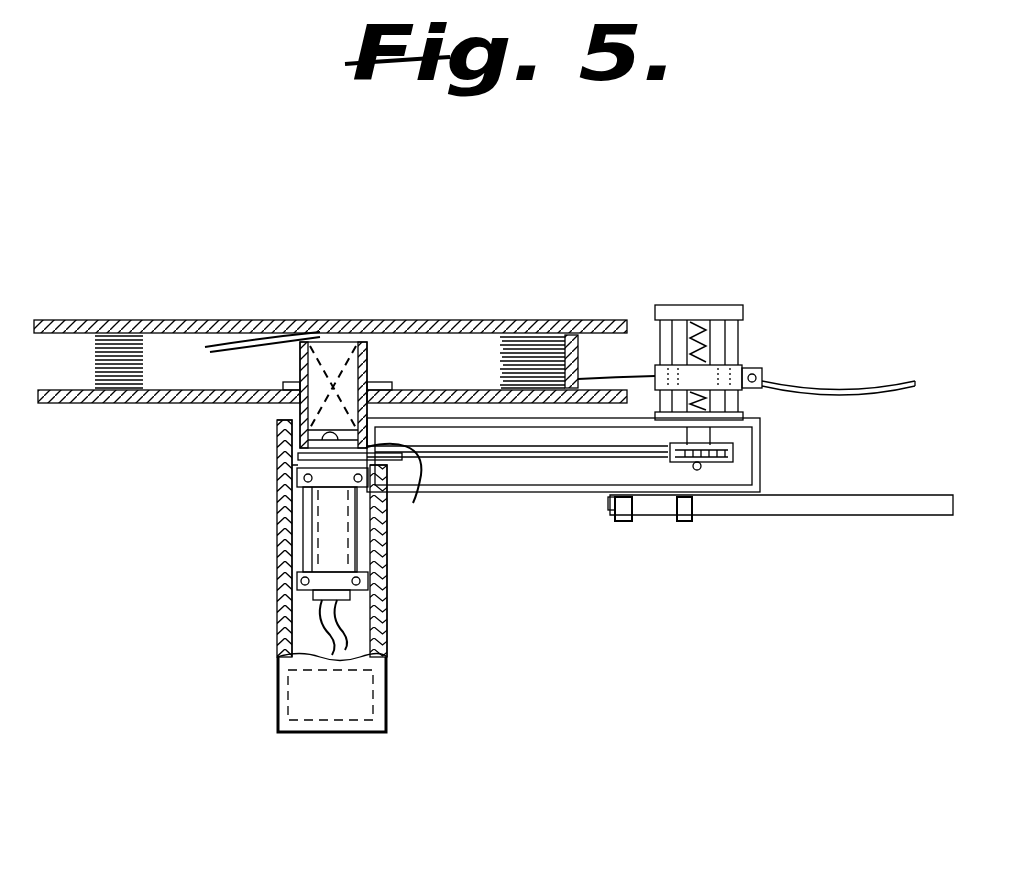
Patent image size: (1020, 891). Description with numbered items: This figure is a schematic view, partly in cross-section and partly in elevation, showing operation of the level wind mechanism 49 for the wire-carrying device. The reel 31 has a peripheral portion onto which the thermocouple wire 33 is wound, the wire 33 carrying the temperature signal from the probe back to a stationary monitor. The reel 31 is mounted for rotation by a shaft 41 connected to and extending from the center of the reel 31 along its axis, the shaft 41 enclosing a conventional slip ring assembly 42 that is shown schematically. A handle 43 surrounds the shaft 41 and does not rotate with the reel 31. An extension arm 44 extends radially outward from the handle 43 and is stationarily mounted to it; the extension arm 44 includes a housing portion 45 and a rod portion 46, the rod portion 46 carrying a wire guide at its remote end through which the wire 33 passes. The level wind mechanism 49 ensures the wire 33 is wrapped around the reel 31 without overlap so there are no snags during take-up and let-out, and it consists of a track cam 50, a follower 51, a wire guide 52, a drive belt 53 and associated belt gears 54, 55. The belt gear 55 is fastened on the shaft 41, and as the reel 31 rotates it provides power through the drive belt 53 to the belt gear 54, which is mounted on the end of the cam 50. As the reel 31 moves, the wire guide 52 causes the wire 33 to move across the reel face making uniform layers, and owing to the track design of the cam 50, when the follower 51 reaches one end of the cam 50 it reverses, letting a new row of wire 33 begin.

The reel 31 is at (197, 282).
The thermocouple wire 33 is at (870, 400).
The shaft 41 is at (336, 546).
The slip ring assembly 42 is at (340, 346).
The handle 43 is at (387, 700).
The extension arm 44 is at (698, 530).
The housing portion 45 is at (760, 440).
The rod portion 46 is at (895, 482).
The level wind mechanism 49 is at (759, 331).
The track cam 50 is at (700, 320).
The follower 51 is at (742, 366).
The wire guide 52 is at (762, 378).
The drive belt 53 is at (561, 460).
The belt gear 54 is at (682, 460).
The belt gear 55 is at (415, 495).